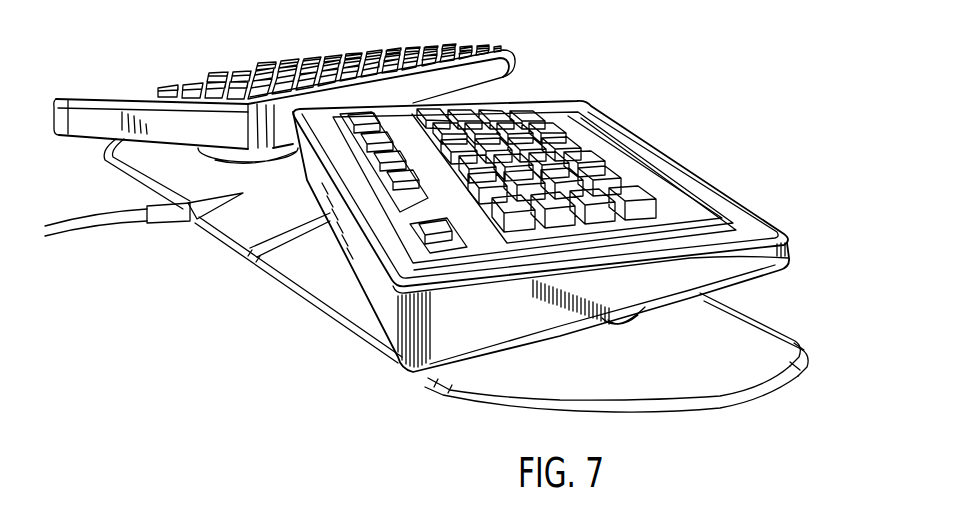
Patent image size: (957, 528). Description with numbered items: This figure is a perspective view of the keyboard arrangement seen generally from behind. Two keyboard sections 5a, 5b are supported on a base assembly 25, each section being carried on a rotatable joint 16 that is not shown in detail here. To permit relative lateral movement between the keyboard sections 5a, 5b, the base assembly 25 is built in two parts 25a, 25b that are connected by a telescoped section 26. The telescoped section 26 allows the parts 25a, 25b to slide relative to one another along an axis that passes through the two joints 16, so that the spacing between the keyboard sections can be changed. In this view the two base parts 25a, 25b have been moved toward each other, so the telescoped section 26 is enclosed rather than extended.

The keyboard section 5a is at (686, 164).
The keyboard section 5b is at (153, 80).
The rotatable joint 16 is at (277, 157).
The base assembly 25 is at (797, 375).
The base assembly part 25a is at (492, 412).
The base assembly part 25b is at (128, 184).
The telescoped section 26 is at (248, 261).